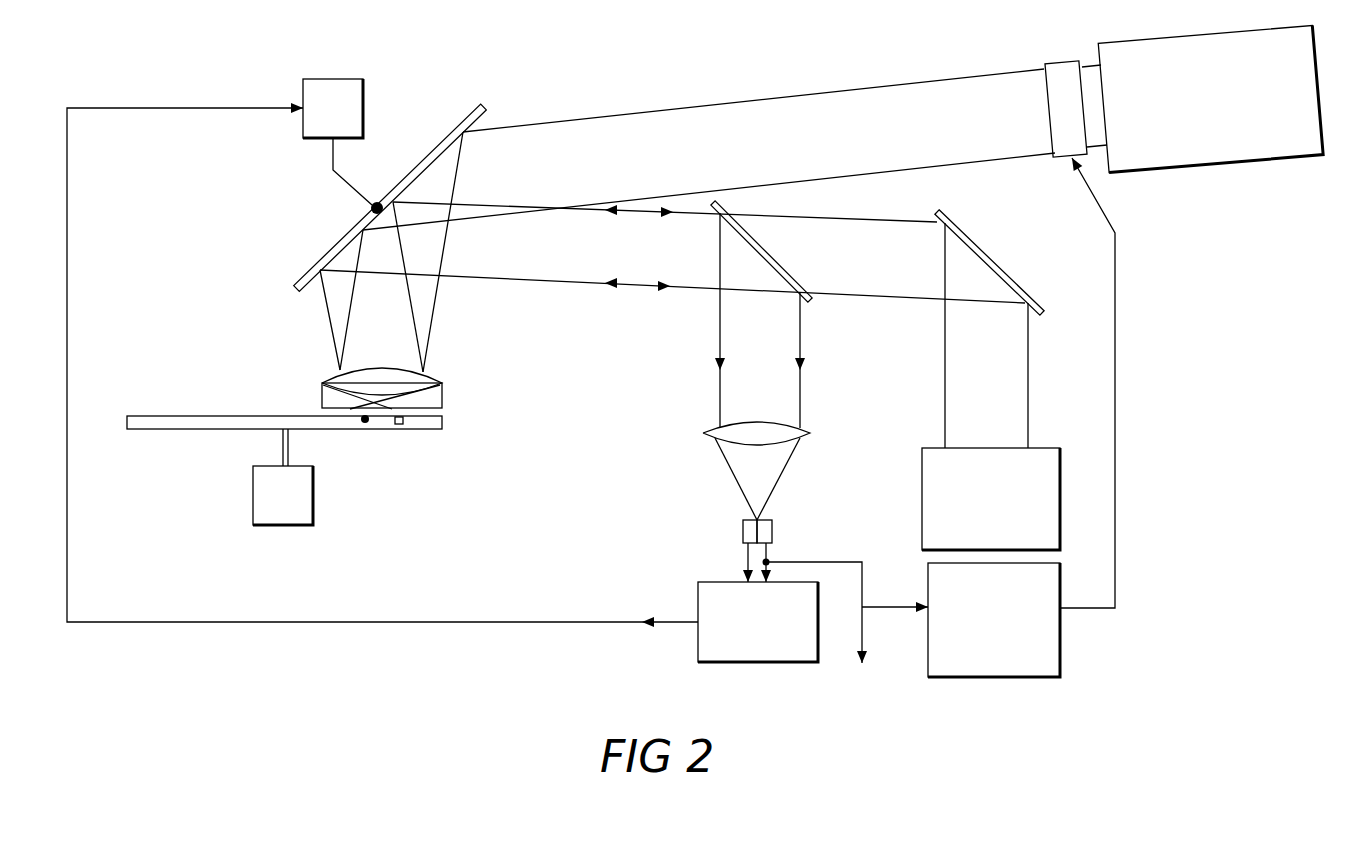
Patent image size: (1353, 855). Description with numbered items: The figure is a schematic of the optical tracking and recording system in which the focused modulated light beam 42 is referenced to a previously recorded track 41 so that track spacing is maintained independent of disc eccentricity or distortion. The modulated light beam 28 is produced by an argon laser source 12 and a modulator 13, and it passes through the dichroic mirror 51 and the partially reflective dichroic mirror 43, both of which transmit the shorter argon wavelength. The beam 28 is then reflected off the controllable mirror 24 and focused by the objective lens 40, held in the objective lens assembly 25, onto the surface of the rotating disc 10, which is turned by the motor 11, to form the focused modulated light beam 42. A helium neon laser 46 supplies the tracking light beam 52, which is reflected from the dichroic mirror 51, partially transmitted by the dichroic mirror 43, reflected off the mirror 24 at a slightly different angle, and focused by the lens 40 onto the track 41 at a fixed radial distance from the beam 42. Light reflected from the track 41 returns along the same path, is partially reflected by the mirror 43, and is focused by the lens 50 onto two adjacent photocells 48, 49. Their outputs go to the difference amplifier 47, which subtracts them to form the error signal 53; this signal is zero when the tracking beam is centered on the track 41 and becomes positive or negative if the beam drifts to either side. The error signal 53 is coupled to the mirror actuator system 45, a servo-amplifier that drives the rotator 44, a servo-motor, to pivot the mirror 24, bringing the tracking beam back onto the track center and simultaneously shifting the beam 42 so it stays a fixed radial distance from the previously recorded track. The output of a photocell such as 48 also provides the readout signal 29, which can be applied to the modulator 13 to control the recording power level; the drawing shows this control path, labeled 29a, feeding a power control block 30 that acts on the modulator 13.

The disc 10 is at (149, 429).
The motor 11 is at (278, 486).
The argon laser source 12 is at (1210, 98).
The modulator 13 is at (1066, 109).
The controllable mirror 24 is at (485, 105).
The objective lens assembly 25 is at (445, 392).
The modulated light beam 28 is at (927, 80).
The readout signal 29 is at (895, 608).
The control line 29a is at (1115, 363).
The power control 30 is at (1002, 666).
The objective lens 40 is at (332, 376).
The previously recorded track 41 is at (403, 423).
The focused modulated light beam 42 is at (365, 422).
The partially reflective dichroic mirror 43 is at (723, 212).
The rotator 44 is at (370, 207).
The mirror actuator system 45 is at (337, 142).
The helium neon laser 46 is at (991, 499).
The difference amplifier 47 is at (758, 622).
The photocell 48 is at (772, 532).
The photocell 49 is at (743, 530).
The lens 50 is at (806, 426).
The dichroic mirror 51 is at (1018, 287).
The tracking light beam 52 is at (1030, 362).
The error signal 53 is at (614, 622).